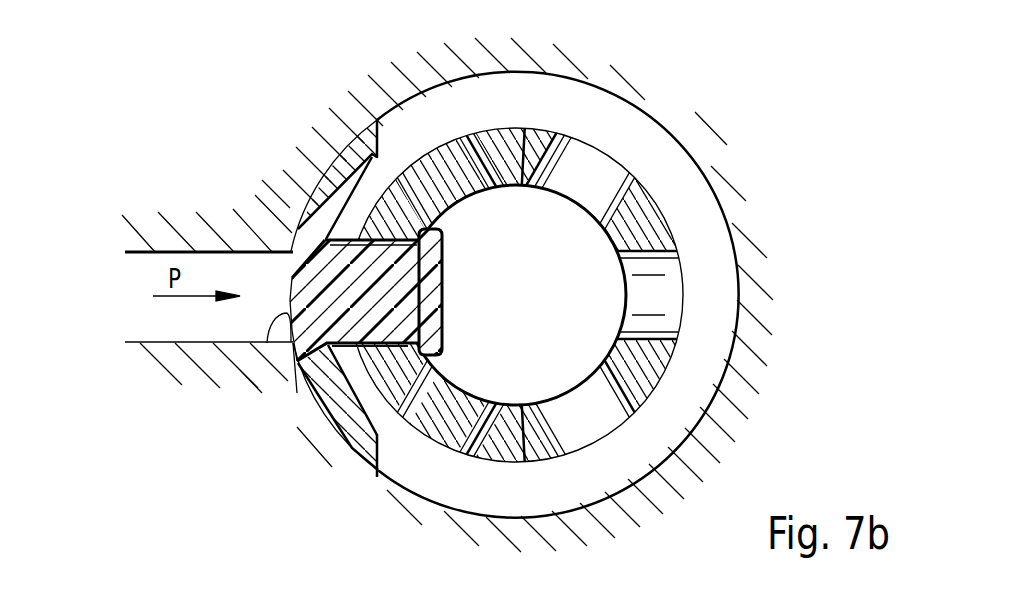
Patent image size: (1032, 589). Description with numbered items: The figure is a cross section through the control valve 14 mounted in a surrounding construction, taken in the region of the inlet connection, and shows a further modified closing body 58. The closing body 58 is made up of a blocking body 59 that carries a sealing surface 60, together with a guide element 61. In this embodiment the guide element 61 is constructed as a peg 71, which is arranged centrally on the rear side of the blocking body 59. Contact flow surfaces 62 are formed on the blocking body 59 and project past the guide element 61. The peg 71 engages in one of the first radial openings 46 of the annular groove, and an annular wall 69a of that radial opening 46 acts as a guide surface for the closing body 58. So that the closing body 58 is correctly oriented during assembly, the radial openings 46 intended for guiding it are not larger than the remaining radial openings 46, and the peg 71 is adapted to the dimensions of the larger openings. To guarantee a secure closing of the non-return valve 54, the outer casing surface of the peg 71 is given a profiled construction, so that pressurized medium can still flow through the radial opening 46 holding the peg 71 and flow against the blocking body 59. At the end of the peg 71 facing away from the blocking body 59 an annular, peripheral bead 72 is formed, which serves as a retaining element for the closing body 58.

The control valve 14 is at (699, 99).
The first radial openings 46 is at (658, 336).
The non-return valve 54 is at (297, 395).
The closing body 58 is at (355, 138).
The blocking body 59 is at (330, 191).
The sealing surface 60 is at (268, 343).
The guide element 61 is at (378, 296).
The peg 71 is at (417, 300).
The contact flow surfaces 62 is at (372, 178).
The annular wall 69a is at (383, 336).
The annular peripheral bead 72 is at (441, 231).